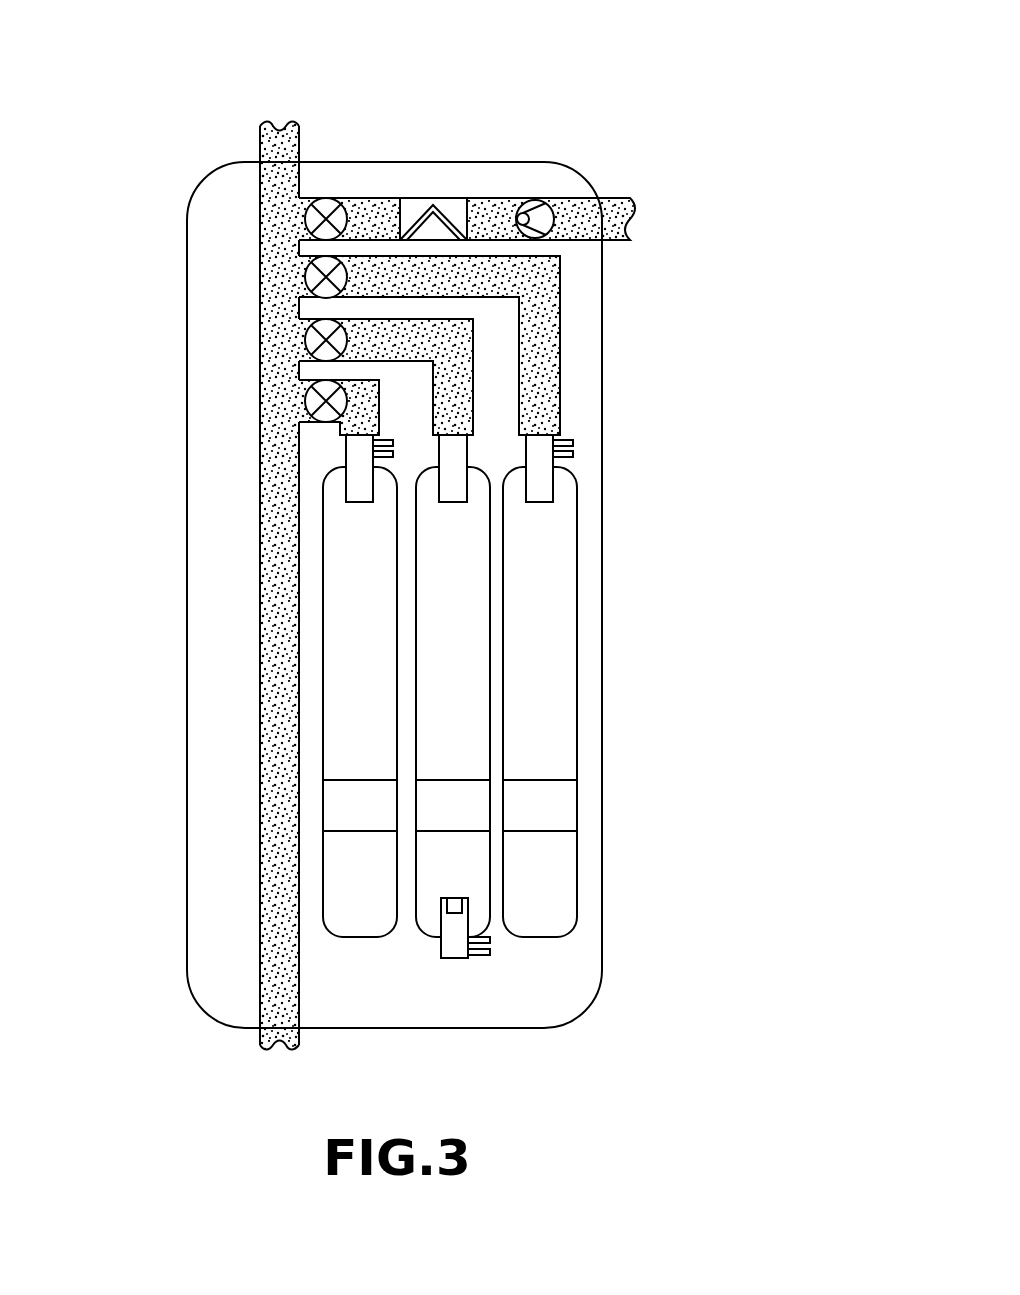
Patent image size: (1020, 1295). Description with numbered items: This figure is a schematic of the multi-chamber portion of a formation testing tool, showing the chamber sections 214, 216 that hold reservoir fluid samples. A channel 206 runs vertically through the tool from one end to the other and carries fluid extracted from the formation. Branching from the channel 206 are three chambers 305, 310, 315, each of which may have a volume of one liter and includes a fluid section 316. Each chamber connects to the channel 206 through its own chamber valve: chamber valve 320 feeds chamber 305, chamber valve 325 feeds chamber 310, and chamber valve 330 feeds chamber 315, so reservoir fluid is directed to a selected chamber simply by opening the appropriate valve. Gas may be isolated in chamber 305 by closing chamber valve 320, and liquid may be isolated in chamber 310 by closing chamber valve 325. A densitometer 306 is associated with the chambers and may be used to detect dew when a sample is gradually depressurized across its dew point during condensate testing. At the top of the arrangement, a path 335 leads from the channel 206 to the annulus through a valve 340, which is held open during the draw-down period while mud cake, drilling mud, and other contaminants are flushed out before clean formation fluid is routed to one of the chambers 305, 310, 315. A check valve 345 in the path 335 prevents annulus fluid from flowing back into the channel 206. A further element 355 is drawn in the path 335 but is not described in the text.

The chamber section 214 is at (518, 517).
The chamber section 216 is at (394, 595).
The channel 206 is at (260, 590).
The path 335 is at (617, 197).
The valve 340 is at (328, 197).
The chamber valve 330 is at (304, 276).
The chamber valve 325 is at (305, 340).
The chamber valve 320 is at (305, 398).
The filter 355 is at (433, 197).
The check valve 345 is at (532, 199).
The chamber 305 is at (337, 624).
The chamber 310 is at (430, 624).
The chamber 315 is at (517, 624).
The fluid section 316 is at (337, 566).
The densitometer 306 is at (362, 778).